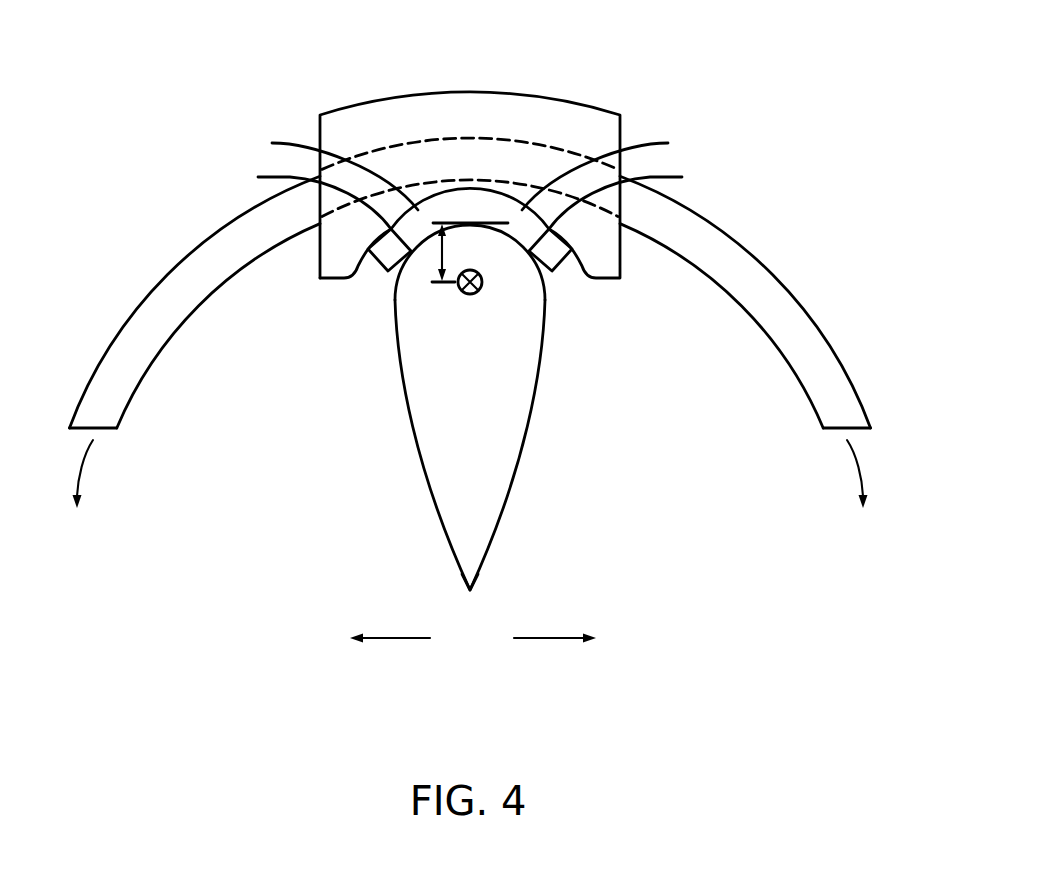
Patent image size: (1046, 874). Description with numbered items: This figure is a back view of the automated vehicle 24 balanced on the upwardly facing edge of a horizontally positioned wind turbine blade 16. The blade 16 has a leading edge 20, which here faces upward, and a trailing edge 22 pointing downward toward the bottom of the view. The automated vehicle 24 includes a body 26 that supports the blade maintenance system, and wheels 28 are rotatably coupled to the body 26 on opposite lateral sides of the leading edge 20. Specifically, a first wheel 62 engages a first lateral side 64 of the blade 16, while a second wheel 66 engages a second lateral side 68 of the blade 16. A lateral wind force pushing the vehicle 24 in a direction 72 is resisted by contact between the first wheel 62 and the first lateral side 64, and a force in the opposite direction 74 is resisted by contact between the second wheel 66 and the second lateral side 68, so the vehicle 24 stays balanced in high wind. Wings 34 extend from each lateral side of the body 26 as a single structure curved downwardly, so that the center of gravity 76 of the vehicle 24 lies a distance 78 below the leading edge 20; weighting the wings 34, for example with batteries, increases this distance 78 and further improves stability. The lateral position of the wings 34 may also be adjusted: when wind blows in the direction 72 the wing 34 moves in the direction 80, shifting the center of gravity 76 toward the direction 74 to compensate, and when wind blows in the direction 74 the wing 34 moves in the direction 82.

The blade 16 is at (514, 432).
The leading edge 20 is at (470, 226).
The trailing edge 22 is at (470, 590).
The automated vehicle 24 is at (388, 50).
The body 26 is at (546, 96).
The wheels 28 is at (378, 262).
The wings 34 is at (774, 272).
The first wheel 62 is at (310, 195).
The first lateral side 64 is at (330, 170).
The second wheel 66 is at (631, 196).
The second lateral side 68 is at (610, 169).
The direction 72 is at (544, 645).
The direction 74 is at (398, 645).
The center of gravity 76 is at (468, 295).
The distance 78 is at (428, 256).
The direction 80 is at (85, 466).
The direction 82 is at (855, 466).